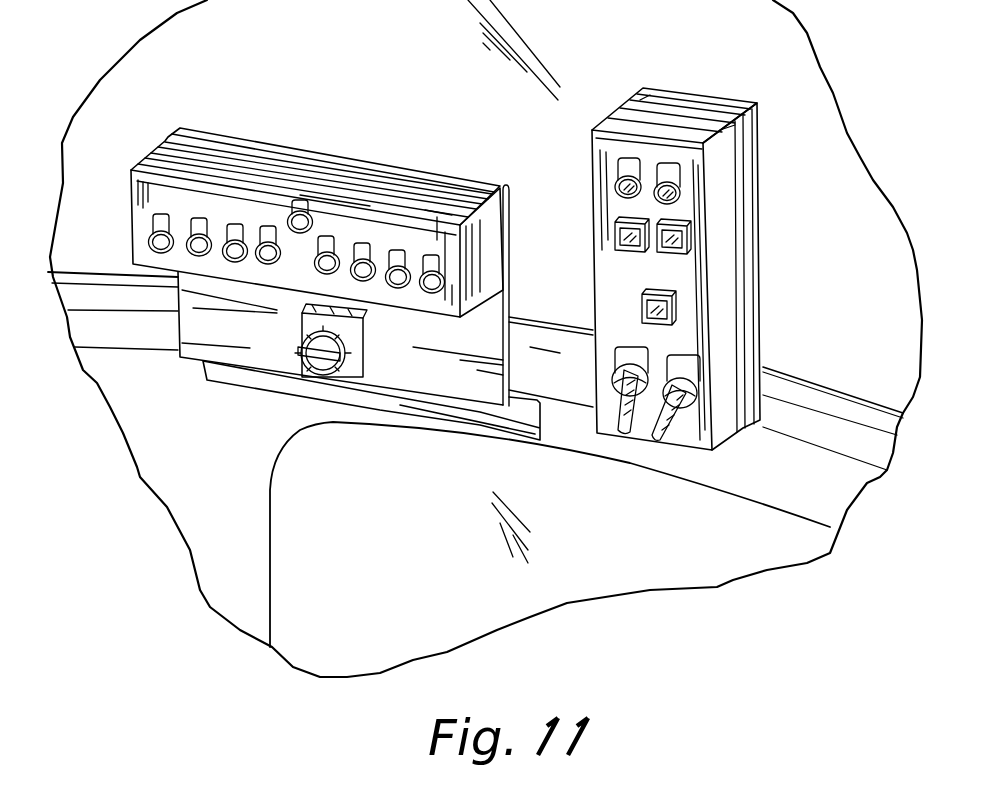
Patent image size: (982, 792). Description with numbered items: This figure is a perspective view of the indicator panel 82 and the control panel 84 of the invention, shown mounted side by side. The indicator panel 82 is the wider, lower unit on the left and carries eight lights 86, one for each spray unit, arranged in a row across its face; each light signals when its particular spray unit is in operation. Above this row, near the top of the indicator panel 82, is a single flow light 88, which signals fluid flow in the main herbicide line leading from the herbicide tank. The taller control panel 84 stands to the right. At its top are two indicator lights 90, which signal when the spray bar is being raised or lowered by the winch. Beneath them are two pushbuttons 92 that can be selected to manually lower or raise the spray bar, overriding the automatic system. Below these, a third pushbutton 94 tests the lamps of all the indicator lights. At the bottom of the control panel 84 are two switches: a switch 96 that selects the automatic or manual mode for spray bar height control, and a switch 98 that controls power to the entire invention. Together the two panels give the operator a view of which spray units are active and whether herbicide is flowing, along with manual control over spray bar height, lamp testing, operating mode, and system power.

The indicator panel 82 is at (227, 337).
The control panel 84 is at (684, 98).
The lights 86 is at (243, 228).
The flow light 88 is at (303, 208).
The indicator lights 90 is at (613, 187).
The pushbuttons 92 is at (613, 230).
The third pushbutton 94 is at (673, 302).
The switch 96 is at (620, 413).
The switch 98 is at (680, 420).